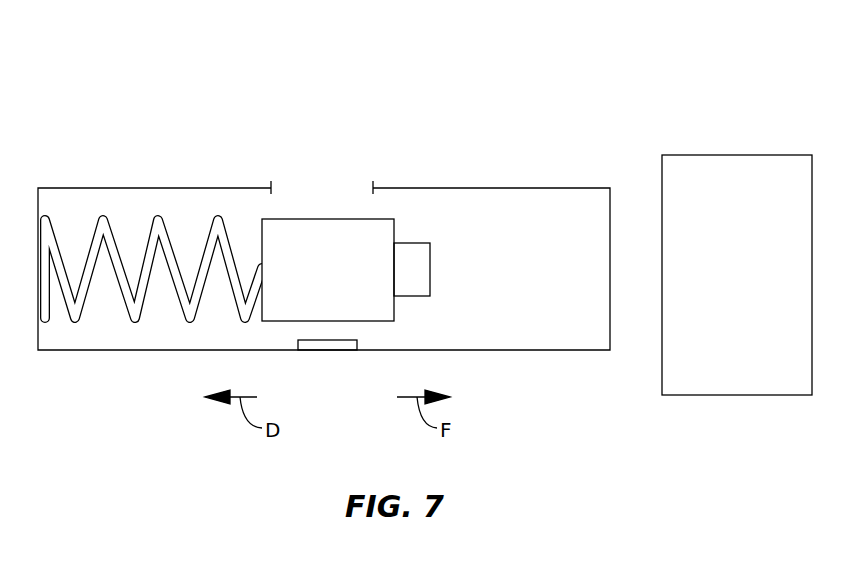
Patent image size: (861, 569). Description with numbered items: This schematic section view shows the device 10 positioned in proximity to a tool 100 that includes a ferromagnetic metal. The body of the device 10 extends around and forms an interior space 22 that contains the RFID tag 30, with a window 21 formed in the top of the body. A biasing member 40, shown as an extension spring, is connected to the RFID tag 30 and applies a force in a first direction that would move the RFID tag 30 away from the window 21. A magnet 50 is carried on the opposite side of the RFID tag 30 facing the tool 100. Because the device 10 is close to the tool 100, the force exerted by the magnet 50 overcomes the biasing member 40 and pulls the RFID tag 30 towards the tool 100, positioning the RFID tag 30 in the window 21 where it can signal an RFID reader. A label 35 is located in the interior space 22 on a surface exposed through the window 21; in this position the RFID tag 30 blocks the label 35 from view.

The device 10 is at (145, 117).
The window 21 is at (335, 172).
The interior space 22 is at (492, 313).
The RFID tag 30 is at (280, 258).
The label 35 is at (330, 350).
The biasing member 40 is at (92, 228).
The magnet 50 is at (408, 263).
The tool 100 is at (757, 289).